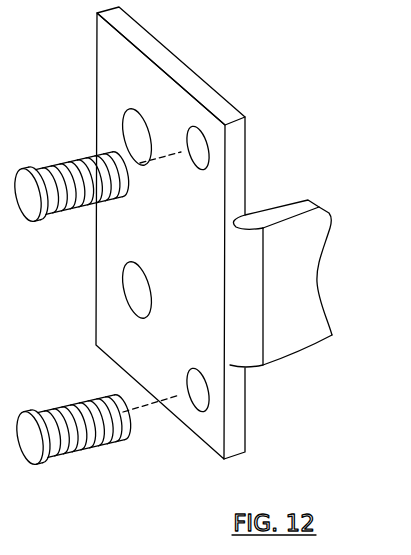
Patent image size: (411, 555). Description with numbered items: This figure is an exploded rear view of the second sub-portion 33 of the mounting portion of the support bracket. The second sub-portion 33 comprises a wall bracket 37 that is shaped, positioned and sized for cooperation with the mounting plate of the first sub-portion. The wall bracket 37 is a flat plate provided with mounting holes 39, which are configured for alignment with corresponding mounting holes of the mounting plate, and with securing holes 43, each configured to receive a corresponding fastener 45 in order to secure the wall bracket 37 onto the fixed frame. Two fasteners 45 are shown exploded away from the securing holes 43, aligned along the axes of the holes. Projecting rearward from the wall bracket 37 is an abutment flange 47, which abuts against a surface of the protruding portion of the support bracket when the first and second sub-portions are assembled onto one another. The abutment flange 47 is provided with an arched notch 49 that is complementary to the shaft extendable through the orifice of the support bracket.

The second sub-portion 33 is at (188, 237).
The wall bracket 37 is at (223, 109).
The mounting hole 39 is at (195, 170).
The securing hole 43 is at (123, 108).
The fastener 45 is at (55, 150).
The abutment flange 47 is at (298, 308).
The arched notch 49 is at (327, 297).